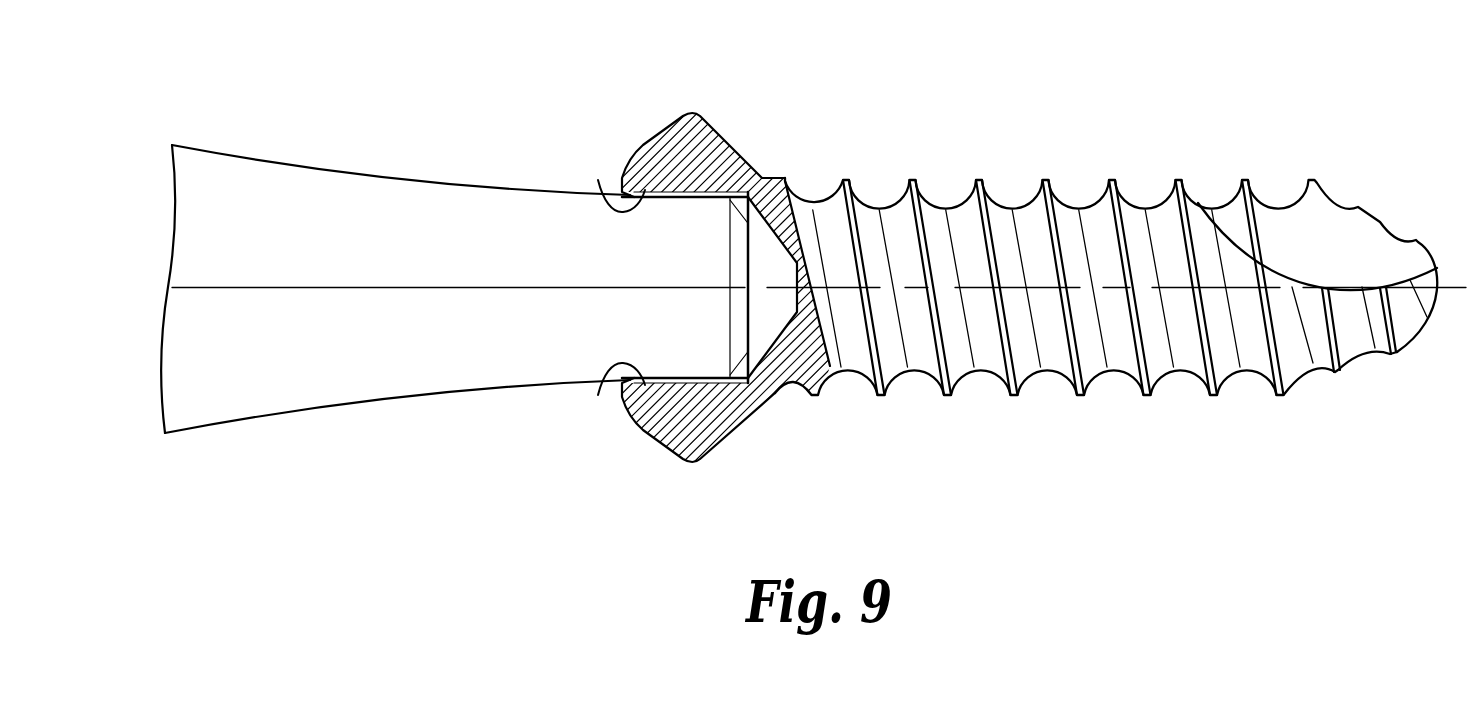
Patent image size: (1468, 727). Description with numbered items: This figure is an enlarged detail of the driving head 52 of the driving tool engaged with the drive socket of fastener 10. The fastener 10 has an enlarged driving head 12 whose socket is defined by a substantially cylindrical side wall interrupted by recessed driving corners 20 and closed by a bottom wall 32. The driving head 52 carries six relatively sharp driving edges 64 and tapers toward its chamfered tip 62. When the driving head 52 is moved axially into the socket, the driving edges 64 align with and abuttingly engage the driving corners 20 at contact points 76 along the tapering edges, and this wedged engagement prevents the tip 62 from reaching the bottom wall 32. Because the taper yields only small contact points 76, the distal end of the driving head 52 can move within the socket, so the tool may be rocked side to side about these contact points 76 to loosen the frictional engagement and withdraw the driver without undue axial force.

The fastener 10 is at (997, 180).
The driving head 12 is at (673, 147).
The driving corners 20 is at (715, 192).
The bottom wall 32 is at (773, 252).
The driving head 52 is at (330, 208).
The chamfered tip 62 is at (752, 192).
The driving edges 64 is at (440, 182).
The contact points 76 is at (598, 180).